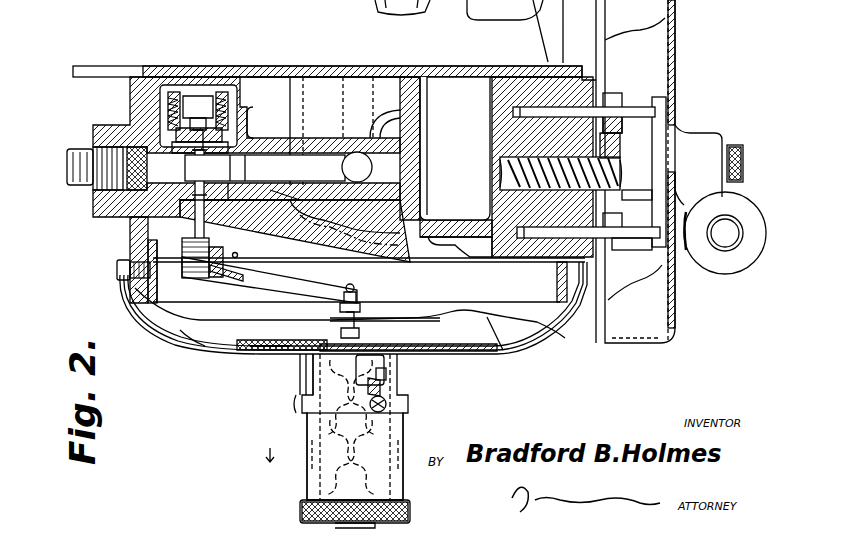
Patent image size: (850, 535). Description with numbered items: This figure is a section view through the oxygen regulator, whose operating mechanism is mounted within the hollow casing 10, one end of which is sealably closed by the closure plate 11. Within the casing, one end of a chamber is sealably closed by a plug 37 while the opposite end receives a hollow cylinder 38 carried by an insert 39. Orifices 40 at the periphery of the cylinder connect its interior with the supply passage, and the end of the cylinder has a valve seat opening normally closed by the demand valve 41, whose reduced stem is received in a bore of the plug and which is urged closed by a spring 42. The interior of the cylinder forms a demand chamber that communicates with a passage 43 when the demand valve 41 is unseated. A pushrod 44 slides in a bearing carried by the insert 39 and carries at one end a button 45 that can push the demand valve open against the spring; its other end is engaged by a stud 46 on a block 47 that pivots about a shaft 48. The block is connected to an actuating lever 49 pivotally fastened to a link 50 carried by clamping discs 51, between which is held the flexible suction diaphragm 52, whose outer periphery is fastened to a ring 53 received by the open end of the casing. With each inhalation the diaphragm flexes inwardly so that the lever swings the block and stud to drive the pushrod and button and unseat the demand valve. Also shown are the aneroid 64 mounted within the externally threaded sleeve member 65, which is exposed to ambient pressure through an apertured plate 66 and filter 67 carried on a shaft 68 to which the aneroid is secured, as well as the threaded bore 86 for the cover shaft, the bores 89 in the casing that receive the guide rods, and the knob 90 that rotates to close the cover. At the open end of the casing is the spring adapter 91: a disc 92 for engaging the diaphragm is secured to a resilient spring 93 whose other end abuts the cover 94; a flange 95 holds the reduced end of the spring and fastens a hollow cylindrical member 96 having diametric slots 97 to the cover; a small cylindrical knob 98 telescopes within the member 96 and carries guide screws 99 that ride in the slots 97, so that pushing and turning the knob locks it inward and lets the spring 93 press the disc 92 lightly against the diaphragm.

The casing 10 is at (502, 88).
The closure plate 11 is at (311, 70).
The plug 37 is at (240, 113).
The hollow cylinder 38 is at (520, 226).
The insert 39 is at (232, 195).
The orifices 40 is at (135, 125).
The demand valve 41 is at (168, 95).
The spring 42 is at (175, 92).
The passage 43 is at (282, 182).
The pushrod 44 is at (264, 216).
The button 45 is at (194, 176).
The stud 46 is at (155, 272).
The block 47 is at (182, 250).
The shaft 48 is at (145, 234).
The actuating lever 49 is at (275, 274).
The link 50 is at (360, 292).
The clamping discs 51 is at (410, 318).
The suction diaphragm 52 is at (497, 350).
The ring 53 is at (557, 280).
The aneroid 64 is at (675, 40).
The sleeve member 65 is at (650, 186).
The apertured plate 66 is at (636, 243).
The filter 67 is at (657, 118).
The shaft 68 is at (614, 112).
The threaded bore 86 is at (500, 170).
The bores 89 is at (512, 112).
The knob 90 is at (752, 188).
The spring adapter 91 is at (298, 496).
The disc 92 is at (240, 342).
The resilient spring 93 is at (268, 352).
The cover 94 is at (185, 342).
The flange 95 is at (302, 356).
The hollow cylindrical member 96 is at (388, 383).
The diametric slots 97 is at (384, 370).
The knob 98 is at (392, 498).
The guide screws 99 is at (388, 408).